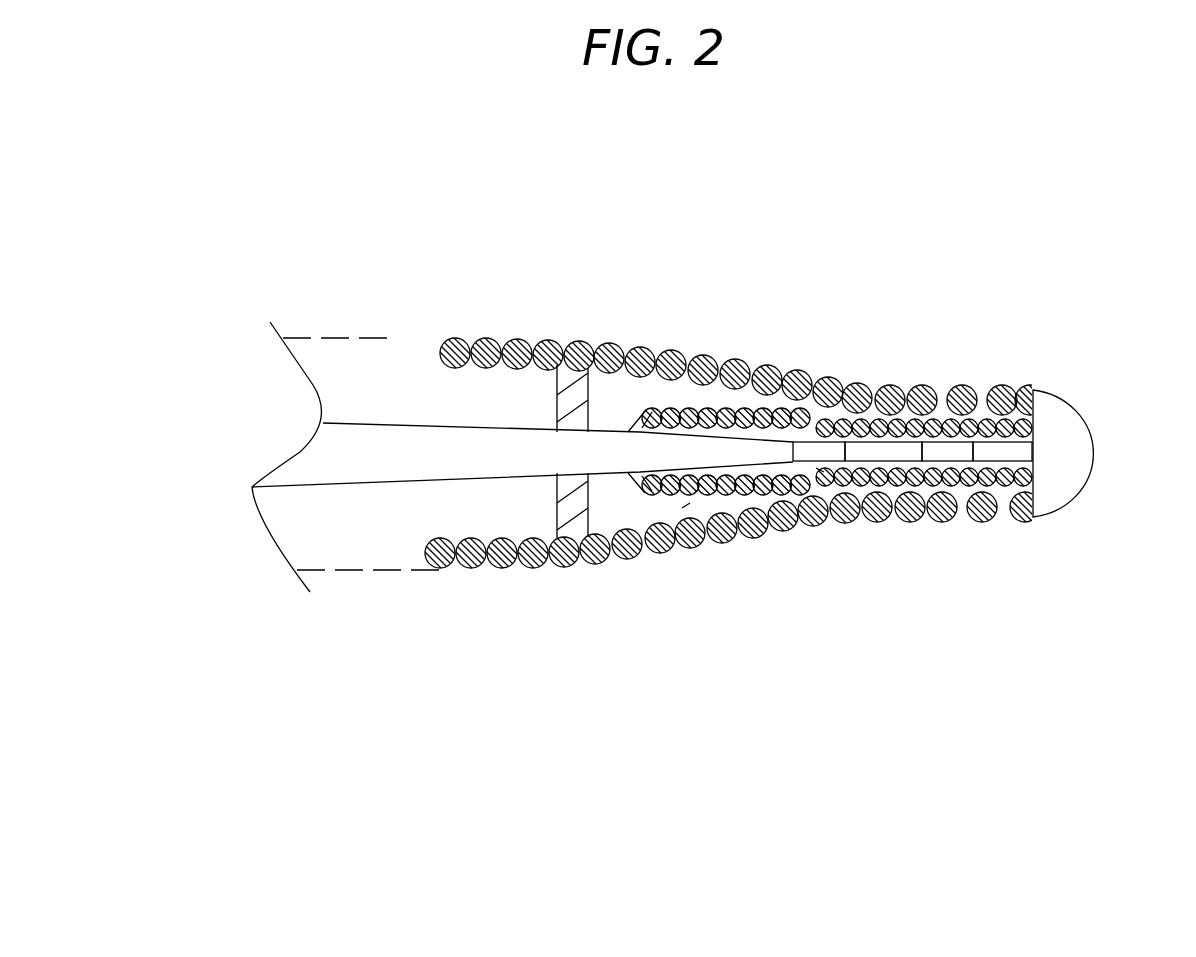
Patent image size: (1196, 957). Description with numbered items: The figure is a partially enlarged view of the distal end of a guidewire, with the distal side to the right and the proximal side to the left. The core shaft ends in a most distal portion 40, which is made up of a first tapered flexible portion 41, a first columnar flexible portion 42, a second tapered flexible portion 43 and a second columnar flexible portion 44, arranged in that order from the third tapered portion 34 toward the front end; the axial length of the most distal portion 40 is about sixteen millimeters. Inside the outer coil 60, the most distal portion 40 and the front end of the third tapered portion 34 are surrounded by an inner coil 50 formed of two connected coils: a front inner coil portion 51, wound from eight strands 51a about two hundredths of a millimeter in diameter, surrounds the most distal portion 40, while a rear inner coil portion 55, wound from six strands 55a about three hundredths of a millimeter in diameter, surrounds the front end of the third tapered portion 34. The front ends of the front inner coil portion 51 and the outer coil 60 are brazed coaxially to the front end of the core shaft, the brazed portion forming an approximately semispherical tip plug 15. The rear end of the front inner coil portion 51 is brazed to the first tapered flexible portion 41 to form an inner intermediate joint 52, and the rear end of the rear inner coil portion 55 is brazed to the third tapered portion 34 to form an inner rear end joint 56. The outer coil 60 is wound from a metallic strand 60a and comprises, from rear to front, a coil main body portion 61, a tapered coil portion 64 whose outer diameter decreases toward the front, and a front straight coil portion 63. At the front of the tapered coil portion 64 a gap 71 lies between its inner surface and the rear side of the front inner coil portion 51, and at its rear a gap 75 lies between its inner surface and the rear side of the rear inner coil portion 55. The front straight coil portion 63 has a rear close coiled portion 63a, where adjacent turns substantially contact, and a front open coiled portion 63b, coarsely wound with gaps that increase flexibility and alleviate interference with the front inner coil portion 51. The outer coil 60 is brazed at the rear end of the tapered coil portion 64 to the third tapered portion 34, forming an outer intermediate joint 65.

The tip plug 15 is at (1060, 467).
The third tapered portion 34 is at (345, 460).
The most distal portion 40 is at (895, 580).
The first tapered flexible portion 41 is at (833, 452).
The first columnar flexible portion 42 is at (877, 452).
The second tapered flexible portion 43 is at (948, 452).
The second columnar flexible portion 44 is at (1012, 450).
The inner coil 50 is at (1045, 428).
The front inner coil portion 51 is at (1035, 423).
The strand 51a is at (1027, 488).
The inner intermediate joint 52 is at (984, 438).
The rear inner coil portion 55 is at (719, 374).
The strand 55a is at (712, 412).
The inner rear end joint 56 is at (635, 427).
The outer coil 60 is at (647, 446).
The strand 60a is at (500, 559).
The coil main body portion 61 is at (414, 402).
The front straight coil portion 63 is at (953, 347).
The close coiled portion 63a is at (937, 368).
The open coiled portion 63b is at (1018, 368).
The tapered coil portion 64 is at (855, 200).
The outer intermediate joint 65 is at (577, 507).
The gap 71 is at (820, 472).
The gap 75 is at (685, 510).